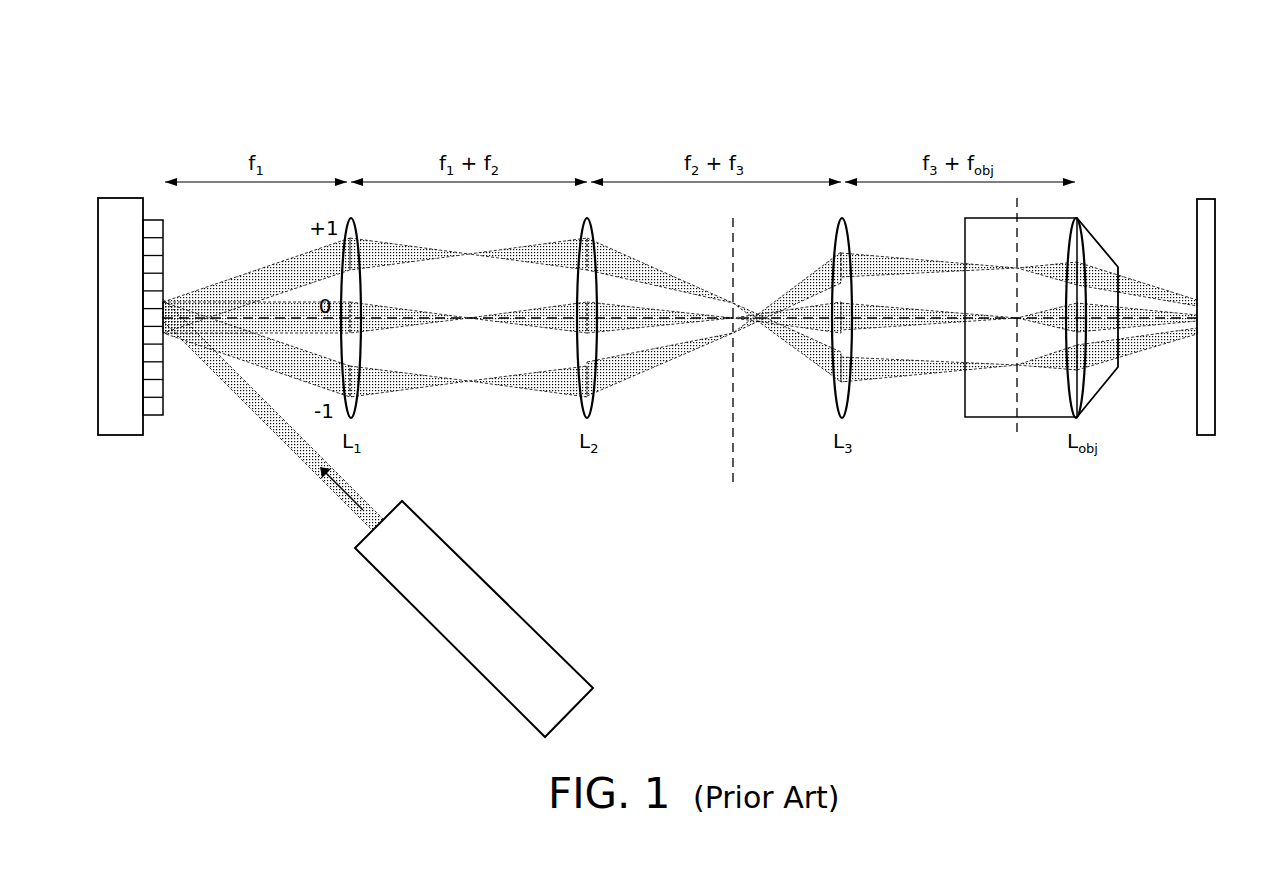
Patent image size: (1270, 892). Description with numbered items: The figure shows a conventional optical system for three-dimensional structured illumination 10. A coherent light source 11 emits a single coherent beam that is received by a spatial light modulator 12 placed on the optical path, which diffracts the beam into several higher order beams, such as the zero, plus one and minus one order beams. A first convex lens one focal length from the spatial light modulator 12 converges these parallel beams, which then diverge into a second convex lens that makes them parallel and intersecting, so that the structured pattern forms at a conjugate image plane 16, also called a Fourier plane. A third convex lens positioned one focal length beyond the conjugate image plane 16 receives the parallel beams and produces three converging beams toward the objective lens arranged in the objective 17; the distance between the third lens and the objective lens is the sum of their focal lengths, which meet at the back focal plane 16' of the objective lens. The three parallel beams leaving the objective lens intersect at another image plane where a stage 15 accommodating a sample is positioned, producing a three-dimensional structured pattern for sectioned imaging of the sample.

The optical system for 3D structured illumination 10 is at (89, 84).
The coherent light source 11 is at (498, 593).
The spatial light modulator 12 is at (121, 198).
The stage 15 is at (1207, 198).
The conjugate image plane 16 is at (733, 365).
The back focal plane 16' is at (997, 340).
The objective 17 is at (1042, 418).